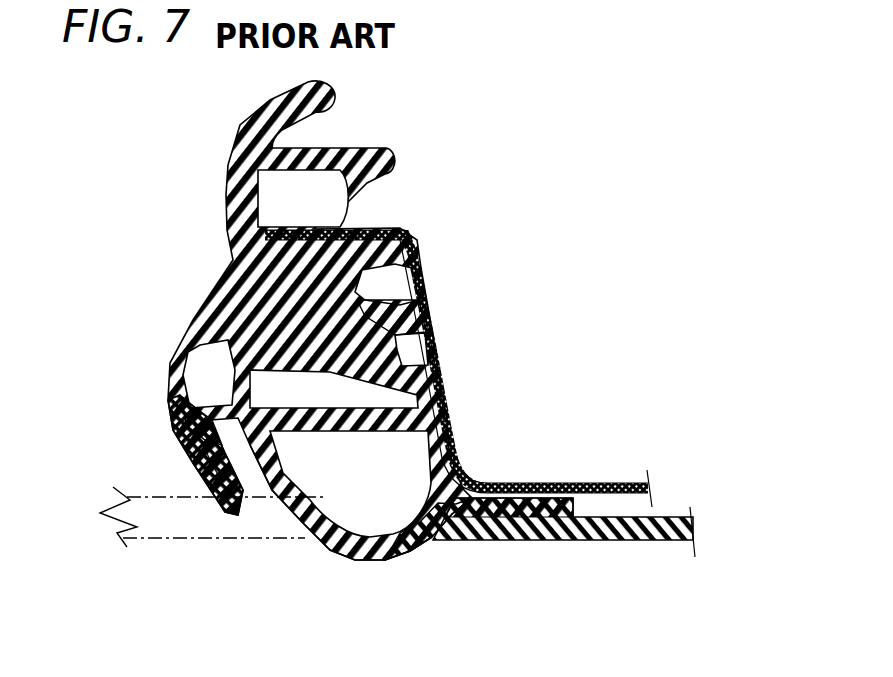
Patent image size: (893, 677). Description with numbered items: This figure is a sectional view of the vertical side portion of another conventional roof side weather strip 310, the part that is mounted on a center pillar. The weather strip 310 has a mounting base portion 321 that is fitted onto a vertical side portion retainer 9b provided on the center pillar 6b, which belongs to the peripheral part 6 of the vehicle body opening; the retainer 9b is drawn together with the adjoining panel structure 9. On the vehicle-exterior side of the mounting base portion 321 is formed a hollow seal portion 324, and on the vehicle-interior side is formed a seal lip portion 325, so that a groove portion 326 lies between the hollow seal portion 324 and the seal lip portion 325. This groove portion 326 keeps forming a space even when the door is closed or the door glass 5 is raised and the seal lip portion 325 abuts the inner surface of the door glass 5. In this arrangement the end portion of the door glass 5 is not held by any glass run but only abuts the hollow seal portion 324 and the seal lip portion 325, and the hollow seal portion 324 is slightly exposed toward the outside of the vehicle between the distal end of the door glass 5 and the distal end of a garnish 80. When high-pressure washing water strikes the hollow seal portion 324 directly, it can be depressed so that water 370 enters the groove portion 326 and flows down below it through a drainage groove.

The door glass 5 is at (200, 542).
The peripheral part of the vehicle body opening 6 is at (553, 480).
The center pillar 6b is at (443, 383).
The garnish 9 is at (368, 222).
The vertical side portion retainer 9b is at (427, 287).
The garnish 80 is at (607, 543).
The roof side weather strip 310 is at (347, 557).
The mounting base portion 321 is at (427, 353).
The hollow seal portion 324 is at (407, 553).
The seal lip portion 325 is at (200, 483).
The groove portion 326 is at (187, 463).
The water 370 is at (185, 432).